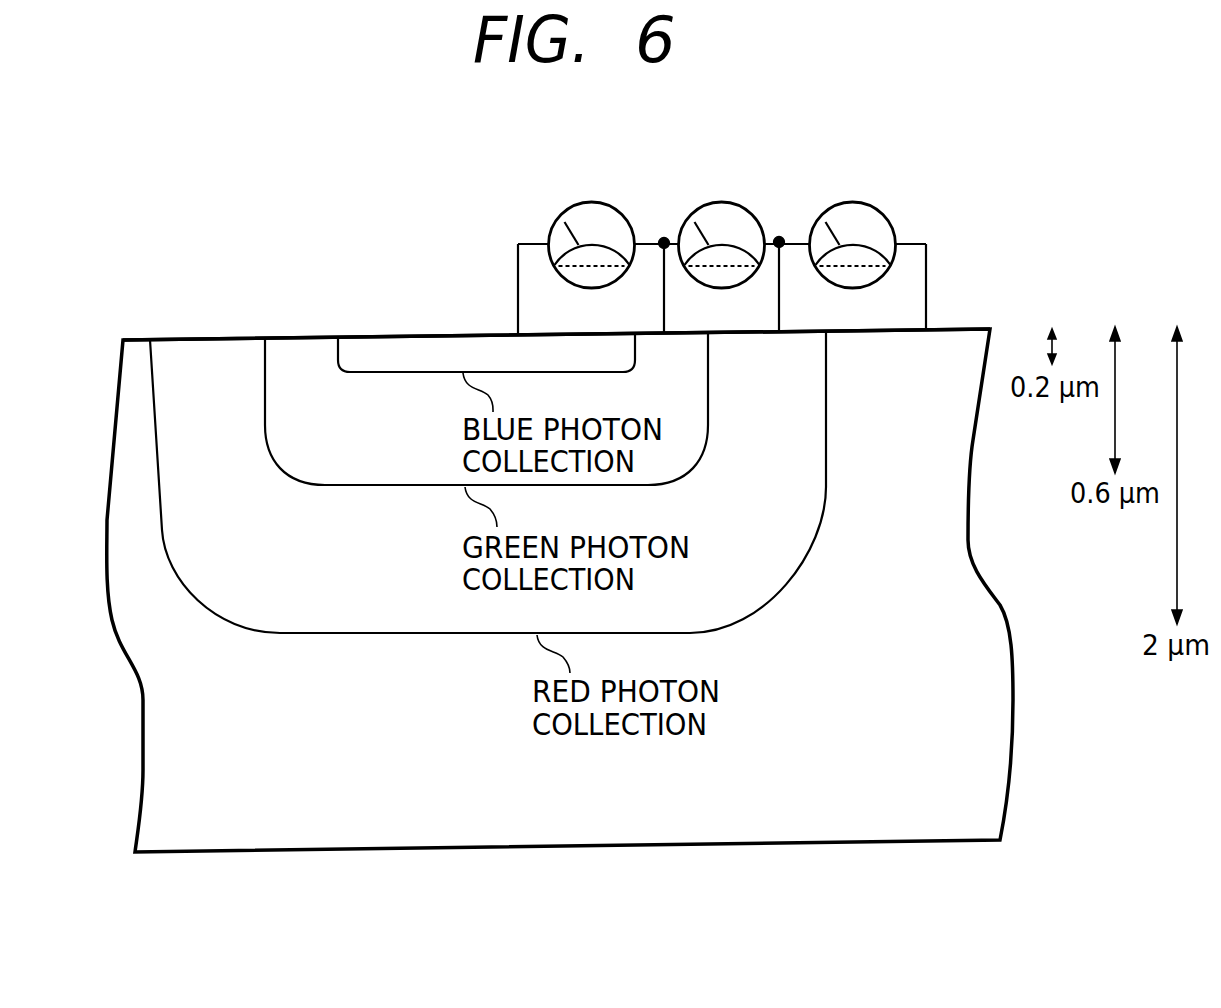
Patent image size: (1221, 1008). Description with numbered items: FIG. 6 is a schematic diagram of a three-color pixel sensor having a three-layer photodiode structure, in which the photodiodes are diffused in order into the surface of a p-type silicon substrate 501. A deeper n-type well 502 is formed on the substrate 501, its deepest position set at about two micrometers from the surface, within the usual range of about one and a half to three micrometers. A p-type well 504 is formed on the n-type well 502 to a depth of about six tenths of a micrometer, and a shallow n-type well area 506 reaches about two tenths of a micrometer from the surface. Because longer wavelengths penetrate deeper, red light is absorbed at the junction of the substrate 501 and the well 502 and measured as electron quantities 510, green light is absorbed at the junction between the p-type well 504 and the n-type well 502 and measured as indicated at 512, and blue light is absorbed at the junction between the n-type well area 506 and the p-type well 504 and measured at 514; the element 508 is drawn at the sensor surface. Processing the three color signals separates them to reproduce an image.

The silicon substrate 501 is at (205, 835).
The n-type well 502 is at (257, 615).
The p-type well 504 is at (307, 467).
The shallow n-type well area 506 is at (362, 340).
The photodiode pixel structure 508 is at (997, 287).
The red electron quantity measurement 510 is at (880, 205).
The green measurement 512 is at (748, 205).
The blue measurement 514 is at (617, 207).